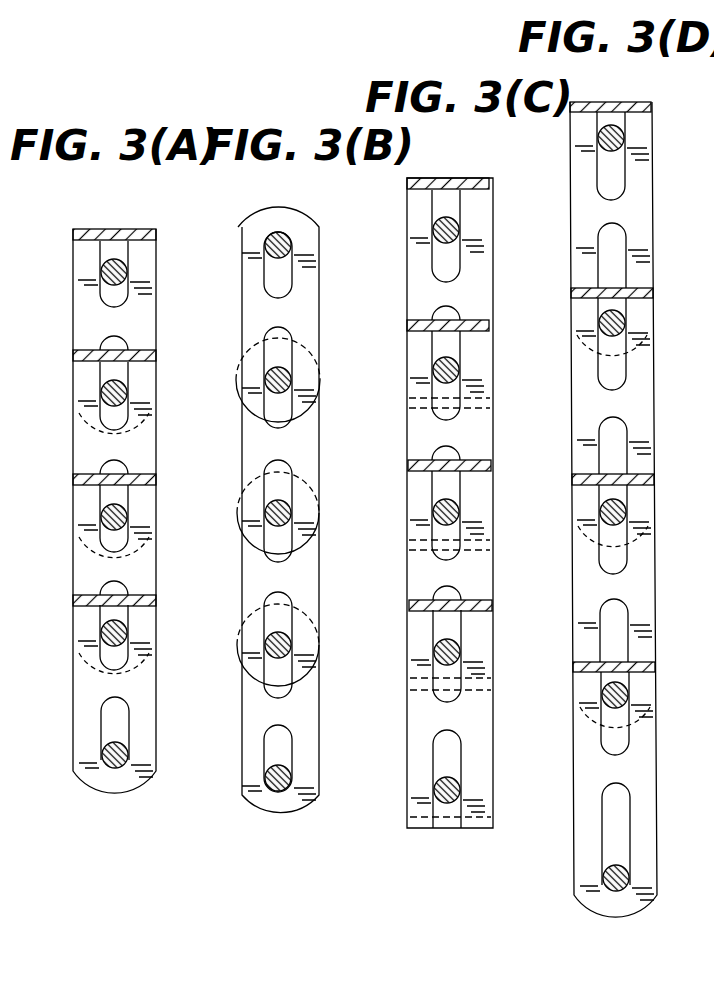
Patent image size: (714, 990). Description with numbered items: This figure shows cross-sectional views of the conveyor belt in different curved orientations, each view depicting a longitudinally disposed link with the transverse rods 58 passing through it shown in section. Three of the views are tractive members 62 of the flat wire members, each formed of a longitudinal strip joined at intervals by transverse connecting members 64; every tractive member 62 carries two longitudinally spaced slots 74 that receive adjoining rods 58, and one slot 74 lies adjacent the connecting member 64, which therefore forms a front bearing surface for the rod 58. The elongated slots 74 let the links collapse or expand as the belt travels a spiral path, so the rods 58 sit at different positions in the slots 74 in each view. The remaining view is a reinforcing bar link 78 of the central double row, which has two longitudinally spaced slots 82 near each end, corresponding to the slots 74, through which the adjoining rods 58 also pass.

In FIG. 3A, the rod 58 is at (105, 270).
In FIG. 3A, the tractive member 62 is at (106, 682).
In FIG. 3A, the transverse connecting member 64 is at (104, 229).
In FIG. 3A, the slot 74 is at (110, 340).
The reinforcing bar link 78 is at (300, 210).
The slot 82 is at (287, 333).